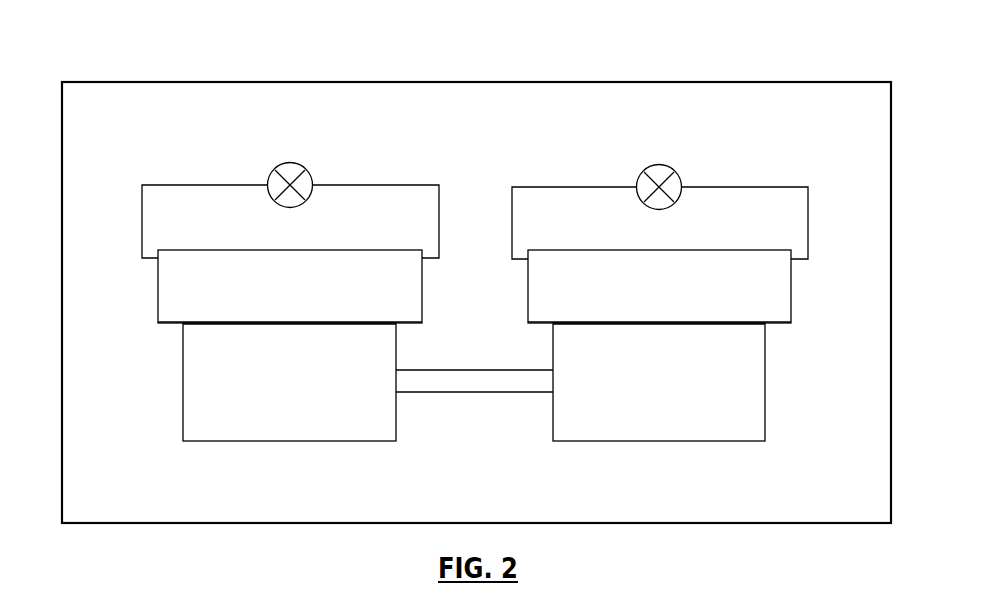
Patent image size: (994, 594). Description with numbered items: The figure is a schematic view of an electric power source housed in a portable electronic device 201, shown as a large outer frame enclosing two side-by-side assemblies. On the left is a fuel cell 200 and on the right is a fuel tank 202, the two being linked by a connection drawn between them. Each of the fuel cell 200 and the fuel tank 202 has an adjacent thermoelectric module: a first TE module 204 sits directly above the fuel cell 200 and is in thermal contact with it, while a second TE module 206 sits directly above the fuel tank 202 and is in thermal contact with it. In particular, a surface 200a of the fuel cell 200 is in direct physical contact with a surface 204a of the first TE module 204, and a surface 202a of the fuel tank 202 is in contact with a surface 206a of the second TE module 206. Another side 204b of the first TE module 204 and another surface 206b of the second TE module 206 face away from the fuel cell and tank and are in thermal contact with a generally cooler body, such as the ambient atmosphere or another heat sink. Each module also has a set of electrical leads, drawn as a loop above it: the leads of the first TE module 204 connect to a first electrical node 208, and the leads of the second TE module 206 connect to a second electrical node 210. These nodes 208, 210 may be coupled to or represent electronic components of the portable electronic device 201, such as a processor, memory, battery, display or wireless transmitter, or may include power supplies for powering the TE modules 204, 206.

The portable electronic device 201 is at (662, 82).
The fuel cell 200 is at (192, 405).
The surface of the fuel cell 200a is at (203, 318).
The fuel tank 202 is at (752, 419).
The surface of the fuel tank 202a is at (600, 318).
The first thermoelectric module 204 is at (170, 303).
The surface of the first thermoelectric module 204a is at (218, 330).
The other side of the first thermoelectric module 204b is at (387, 246).
The second thermoelectric module 206 is at (780, 300).
The surface of the second thermoelectric module 206a is at (615, 330).
The other surface of the second thermoelectric module 206b is at (783, 246).
The first electrical node 208 is at (297, 170).
The second electrical node 210 is at (662, 170).